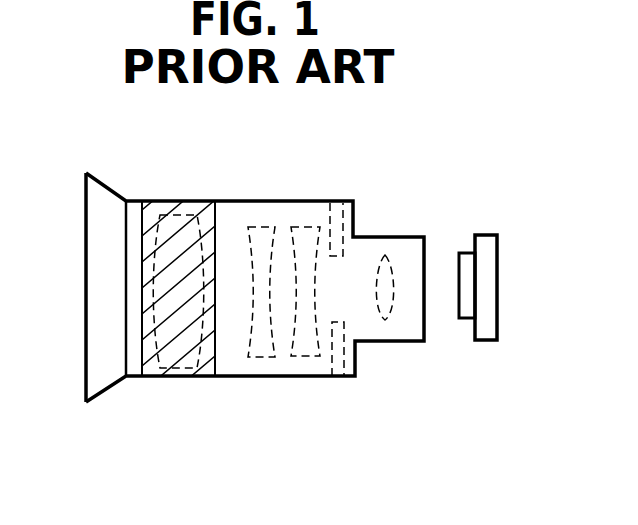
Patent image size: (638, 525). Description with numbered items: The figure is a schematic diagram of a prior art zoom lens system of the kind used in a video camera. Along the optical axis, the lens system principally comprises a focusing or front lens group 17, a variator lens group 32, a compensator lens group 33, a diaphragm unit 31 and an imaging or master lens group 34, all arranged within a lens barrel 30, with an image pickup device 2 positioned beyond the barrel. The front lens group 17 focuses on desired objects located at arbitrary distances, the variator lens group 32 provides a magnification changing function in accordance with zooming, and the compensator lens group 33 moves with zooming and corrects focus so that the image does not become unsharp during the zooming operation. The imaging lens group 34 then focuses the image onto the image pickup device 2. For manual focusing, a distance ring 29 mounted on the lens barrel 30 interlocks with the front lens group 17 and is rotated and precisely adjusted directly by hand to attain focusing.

The image pickup device 2 is at (498, 262).
The focusing lens group 17 is at (155, 352).
The distance ring 29 is at (155, 201).
The lens barrel 30 is at (275, 202).
The diaphragm unit 31 is at (337, 205).
The variator lens group 32 is at (262, 350).
The compensator lens group 33 is at (308, 355).
The imaging lens group 34 is at (385, 323).